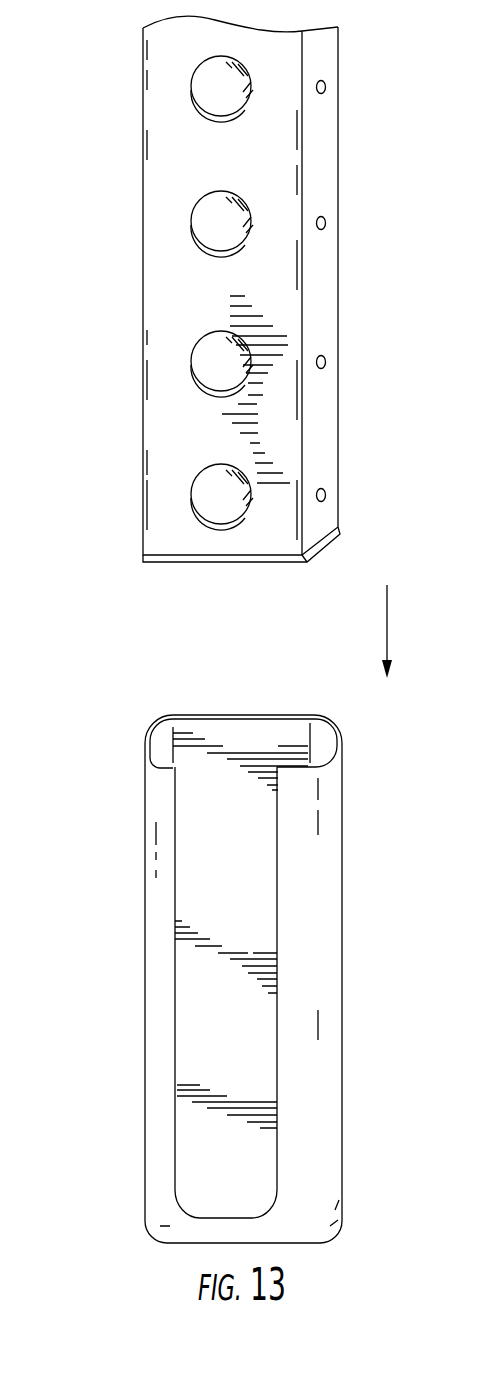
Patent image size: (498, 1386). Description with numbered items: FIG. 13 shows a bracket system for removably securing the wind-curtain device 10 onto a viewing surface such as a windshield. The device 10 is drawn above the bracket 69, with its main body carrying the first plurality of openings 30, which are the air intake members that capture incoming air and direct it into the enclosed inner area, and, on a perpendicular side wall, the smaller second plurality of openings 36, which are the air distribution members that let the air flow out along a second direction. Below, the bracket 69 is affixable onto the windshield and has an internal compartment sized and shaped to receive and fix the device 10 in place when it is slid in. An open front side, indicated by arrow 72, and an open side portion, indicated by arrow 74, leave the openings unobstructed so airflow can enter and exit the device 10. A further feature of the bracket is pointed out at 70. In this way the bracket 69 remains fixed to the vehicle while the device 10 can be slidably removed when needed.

The device 10 is at (93, 147).
The first plurality of openings 30 is at (192, 97).
The second plurality of openings 36 is at (327, 92).
The bracket 69 is at (147, 1197).
The top bar 70 is at (238, 730).
The arrow indicating open front side 72 is at (200, 1020).
The arrow indicating open side portion 74 is at (306, 909).